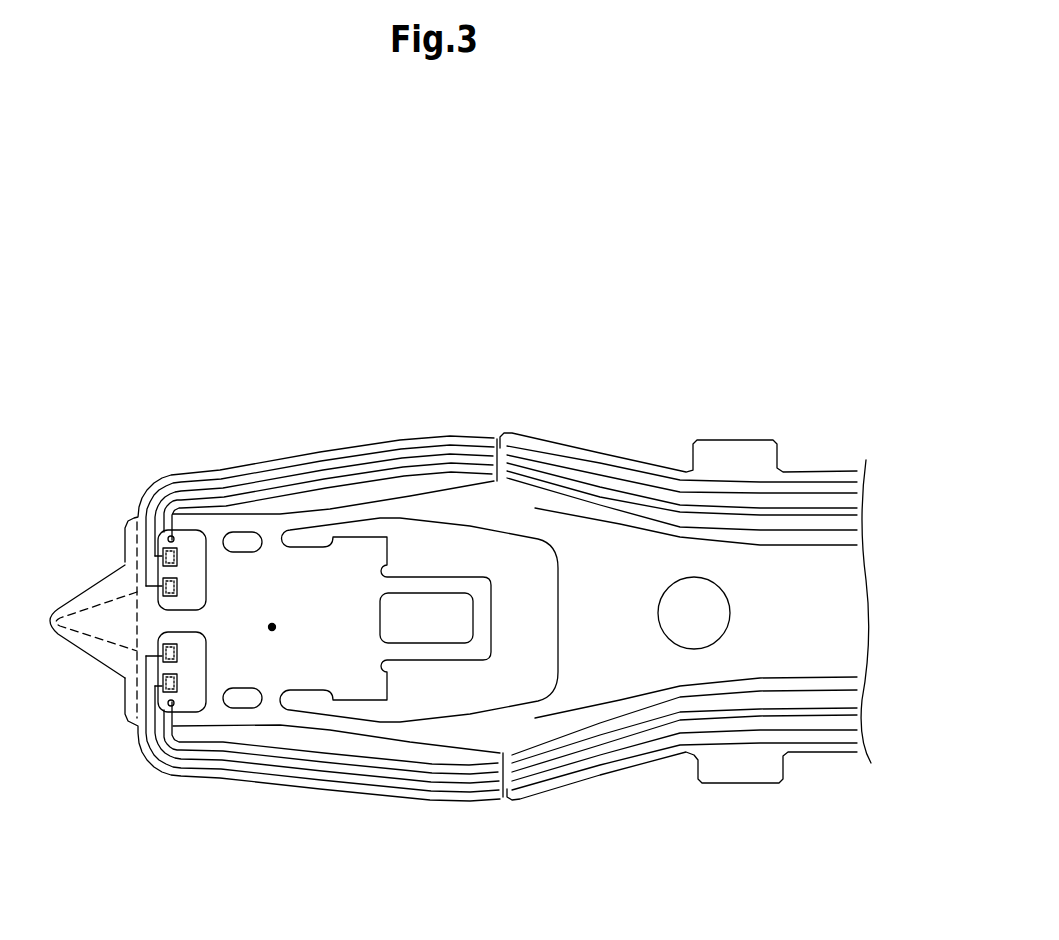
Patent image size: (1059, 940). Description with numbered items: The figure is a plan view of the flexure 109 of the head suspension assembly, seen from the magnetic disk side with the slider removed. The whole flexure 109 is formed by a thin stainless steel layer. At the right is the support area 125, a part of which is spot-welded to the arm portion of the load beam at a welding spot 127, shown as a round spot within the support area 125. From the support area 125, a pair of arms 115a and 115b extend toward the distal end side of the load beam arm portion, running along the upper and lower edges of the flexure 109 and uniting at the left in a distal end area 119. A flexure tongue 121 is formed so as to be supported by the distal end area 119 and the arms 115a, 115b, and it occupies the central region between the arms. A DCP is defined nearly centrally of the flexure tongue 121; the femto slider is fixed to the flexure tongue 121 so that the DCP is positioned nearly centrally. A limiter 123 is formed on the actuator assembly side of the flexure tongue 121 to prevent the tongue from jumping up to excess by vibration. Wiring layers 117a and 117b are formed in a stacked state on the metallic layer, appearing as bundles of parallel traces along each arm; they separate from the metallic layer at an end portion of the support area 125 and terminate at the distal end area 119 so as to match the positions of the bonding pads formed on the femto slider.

The flexure 109 is at (323, 382).
The arm 115a is at (412, 508).
The arm 115b is at (433, 733).
The wiring layer 117a is at (265, 462).
The wiring layer 117b is at (290, 785).
The distal end area 119 is at (152, 592).
The flexure tongue 121 is at (362, 659).
The limiter 123 is at (493, 621).
The support area 125 is at (632, 631).
The welding spot 127 is at (731, 612).
The element DCP is at (275, 625).